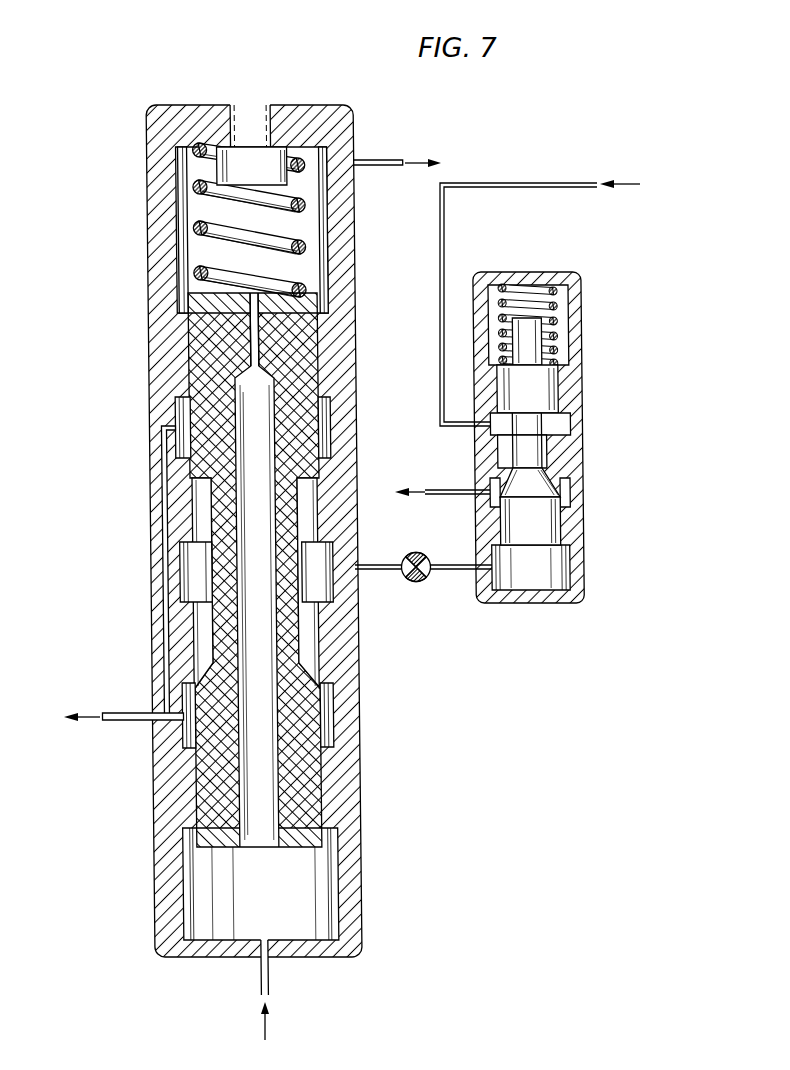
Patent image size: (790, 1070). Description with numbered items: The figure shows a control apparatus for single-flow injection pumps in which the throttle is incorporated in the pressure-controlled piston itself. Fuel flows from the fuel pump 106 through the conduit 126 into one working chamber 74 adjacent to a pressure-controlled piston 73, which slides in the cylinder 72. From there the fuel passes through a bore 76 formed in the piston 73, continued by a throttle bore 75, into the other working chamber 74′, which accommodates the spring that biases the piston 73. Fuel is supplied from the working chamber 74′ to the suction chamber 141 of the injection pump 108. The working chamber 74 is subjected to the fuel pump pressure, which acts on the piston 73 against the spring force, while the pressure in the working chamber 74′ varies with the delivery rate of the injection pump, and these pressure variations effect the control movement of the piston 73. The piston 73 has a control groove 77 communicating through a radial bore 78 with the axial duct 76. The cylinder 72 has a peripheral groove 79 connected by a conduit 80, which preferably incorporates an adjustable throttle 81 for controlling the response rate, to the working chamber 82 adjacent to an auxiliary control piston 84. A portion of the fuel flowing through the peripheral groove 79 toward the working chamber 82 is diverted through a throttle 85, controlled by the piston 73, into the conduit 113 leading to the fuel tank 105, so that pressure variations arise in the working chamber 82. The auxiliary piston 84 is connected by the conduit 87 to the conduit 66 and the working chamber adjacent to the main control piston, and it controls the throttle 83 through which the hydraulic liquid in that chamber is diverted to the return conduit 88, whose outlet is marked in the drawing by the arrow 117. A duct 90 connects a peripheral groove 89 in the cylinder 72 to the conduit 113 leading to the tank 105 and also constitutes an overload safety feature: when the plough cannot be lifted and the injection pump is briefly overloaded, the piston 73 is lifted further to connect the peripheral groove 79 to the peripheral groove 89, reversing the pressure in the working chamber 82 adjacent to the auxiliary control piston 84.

The cylinder 72 is at (160, 303).
The pressure-controlled piston 73 is at (215, 372).
The working chamber 74 is at (223, 884).
The working chamber 74' is at (209, 228).
The throttle bore 75 is at (252, 340).
The bore 76 is at (268, 637).
The control groove 77 is at (200, 508).
The radial bore 78 is at (300, 567).
The peripheral groove 79 is at (195, 590).
The conduit 80 is at (456, 566).
The adjustable throttle 81 is at (416, 551).
The working chamber 82 is at (550, 574).
The throttle 83 is at (553, 473).
The auxiliary control piston 84 is at (545, 522).
The throttle 85 is at (200, 678).
The conduit 87 is at (577, 182).
The return conduit 88 is at (438, 492).
The peripheral groove 89 is at (182, 409).
The duct 90 is at (160, 445).
The conduit 113 is at (115, 715).
The conduit 126 is at (269, 981).
The suction chamber 141 is at (386, 158).
The fuel tank 105 is at (81, 713).
The fuel pump 106 is at (268, 1028).
The injection pump 108 is at (427, 158).
The flow to 117 is at (397, 489).
The conduit 66 is at (627, 183).